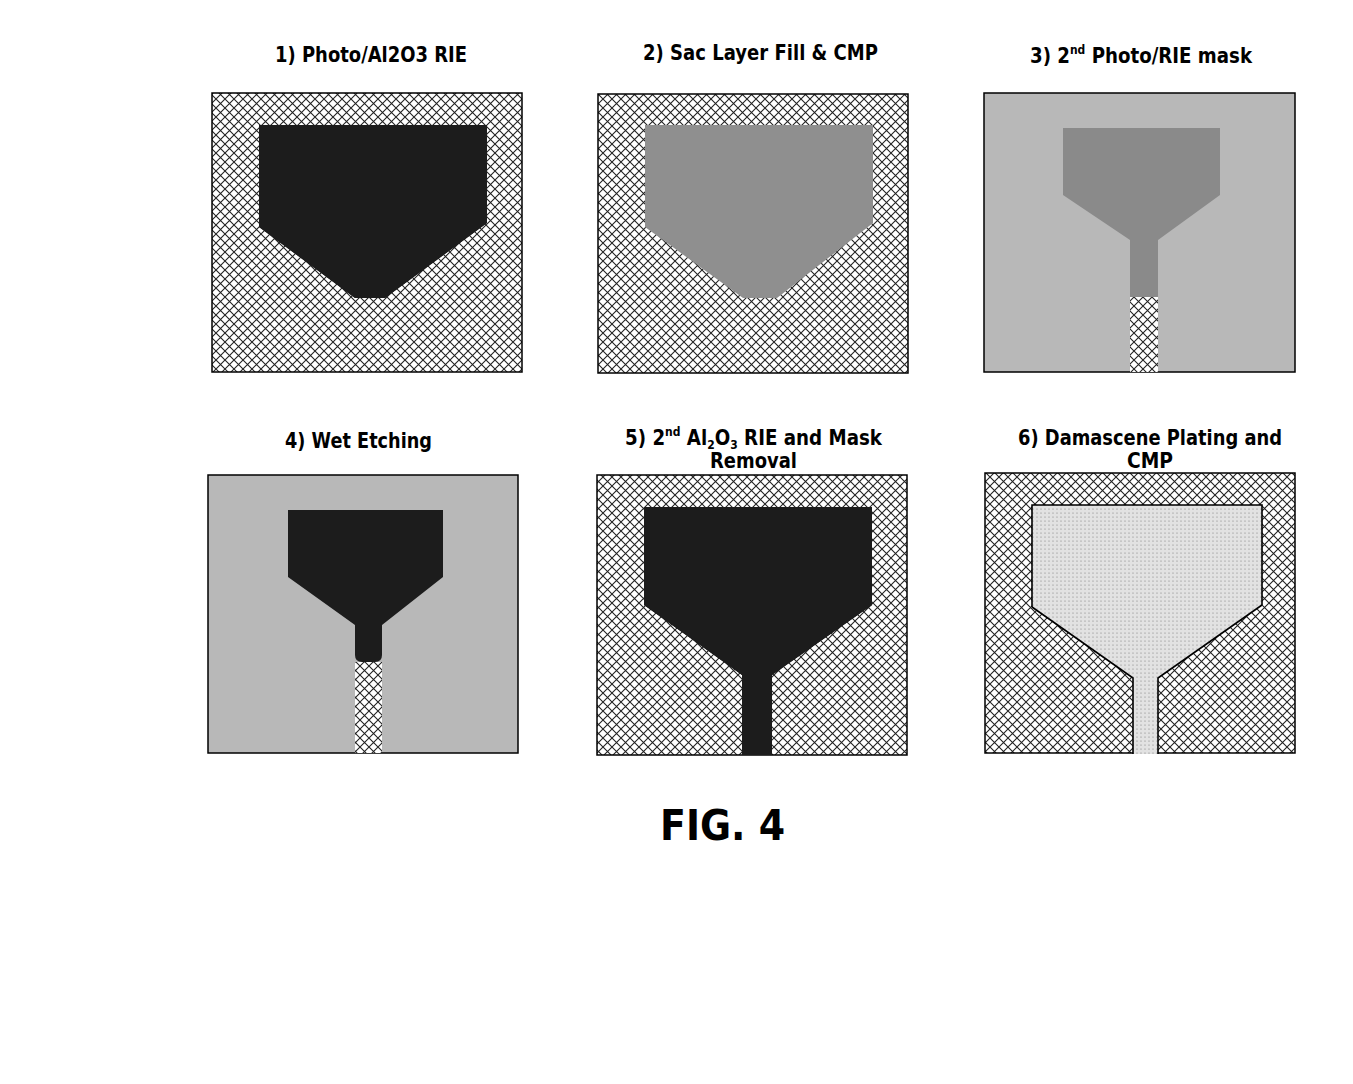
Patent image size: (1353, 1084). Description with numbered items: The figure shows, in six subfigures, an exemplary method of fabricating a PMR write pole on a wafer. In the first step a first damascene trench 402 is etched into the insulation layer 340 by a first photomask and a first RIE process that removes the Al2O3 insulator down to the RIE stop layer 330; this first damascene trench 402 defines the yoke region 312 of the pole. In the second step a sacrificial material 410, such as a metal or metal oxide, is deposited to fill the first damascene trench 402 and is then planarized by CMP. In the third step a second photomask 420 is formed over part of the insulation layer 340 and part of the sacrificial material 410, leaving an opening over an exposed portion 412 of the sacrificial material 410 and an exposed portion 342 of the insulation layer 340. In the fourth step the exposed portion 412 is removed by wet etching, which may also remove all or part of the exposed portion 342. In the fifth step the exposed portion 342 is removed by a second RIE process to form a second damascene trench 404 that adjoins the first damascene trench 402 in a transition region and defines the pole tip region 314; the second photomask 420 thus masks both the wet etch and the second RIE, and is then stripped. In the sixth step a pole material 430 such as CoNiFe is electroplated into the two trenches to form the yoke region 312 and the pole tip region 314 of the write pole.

The yoke region 312 is at (1170, 522).
The pole tip region 314 is at (1150, 730).
The RIE stop layer 330 is at (565, 440).
The insulation layer 340 is at (753, 424).
The exposed portion of the insulation layer 342 is at (1137, 322).
The first damascene trench 402 is at (467, 167).
The second damascene trench 404 is at (770, 748).
The sacrificial material 410 is at (759, 211).
The exposed portion of the SAC material 412 is at (1140, 162).
The second photomask 420 is at (751, 423).
The pole material 430 is at (1163, 621).